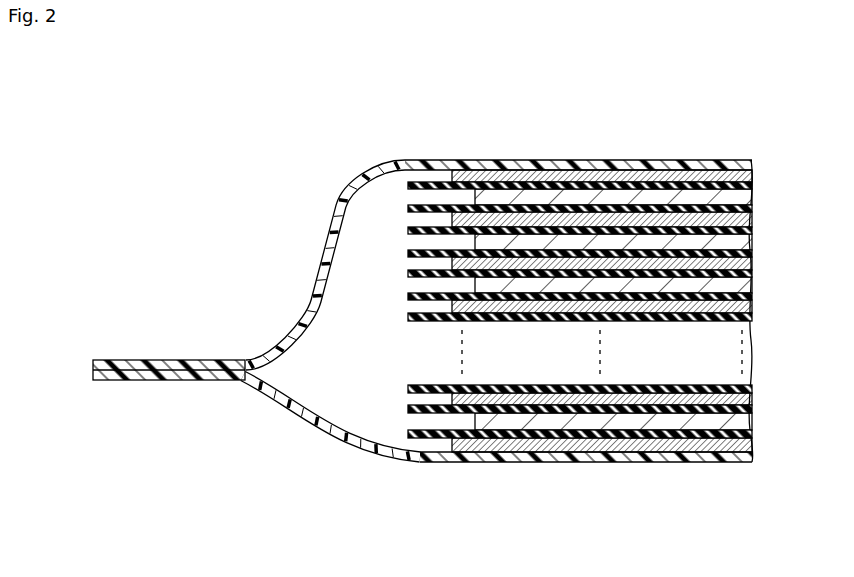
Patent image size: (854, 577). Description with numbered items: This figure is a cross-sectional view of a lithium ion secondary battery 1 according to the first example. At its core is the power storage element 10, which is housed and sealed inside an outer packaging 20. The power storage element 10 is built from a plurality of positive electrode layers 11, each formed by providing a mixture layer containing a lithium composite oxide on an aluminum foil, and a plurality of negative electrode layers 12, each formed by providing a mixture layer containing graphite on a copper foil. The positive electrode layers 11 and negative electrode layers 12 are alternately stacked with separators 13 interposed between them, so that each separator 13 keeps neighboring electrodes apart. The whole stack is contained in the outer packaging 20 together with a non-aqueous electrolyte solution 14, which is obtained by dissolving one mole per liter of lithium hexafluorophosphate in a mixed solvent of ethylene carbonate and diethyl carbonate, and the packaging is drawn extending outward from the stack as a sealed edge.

The lithium ion secondary battery 1 is at (333, 161).
The power storage element 10 is at (368, 264).
The positive electrode layer 11 is at (703, 159).
The negative electrode layer 12 is at (613, 168).
The separator 13 is at (441, 181).
The non-aqueous electrolyte solution 14 is at (338, 397).
The outer packaging 20 is at (158, 378).